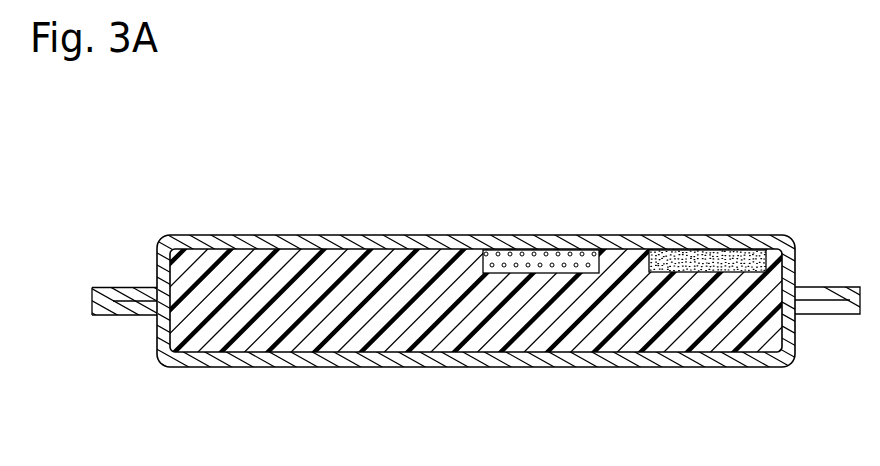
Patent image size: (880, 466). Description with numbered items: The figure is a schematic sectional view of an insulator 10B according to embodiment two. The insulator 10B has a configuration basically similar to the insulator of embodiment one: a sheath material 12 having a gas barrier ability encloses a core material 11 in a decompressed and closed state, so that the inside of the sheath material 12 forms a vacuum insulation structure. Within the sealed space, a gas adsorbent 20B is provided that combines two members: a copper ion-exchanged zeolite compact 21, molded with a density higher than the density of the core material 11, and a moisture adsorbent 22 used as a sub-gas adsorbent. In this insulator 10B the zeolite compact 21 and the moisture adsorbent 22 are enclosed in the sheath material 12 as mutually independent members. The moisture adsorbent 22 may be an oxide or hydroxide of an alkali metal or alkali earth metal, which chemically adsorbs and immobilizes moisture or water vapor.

The insulator 10B is at (242, 200).
The core material 11 is at (333, 257).
The sheath material 12 is at (430, 359).
The gas adsorbent 20B is at (782, 150).
The copper ion-exchanged ZSM-5 type zeolite compact 21 is at (537, 250).
The moisture adsorbent 22 is at (700, 250).